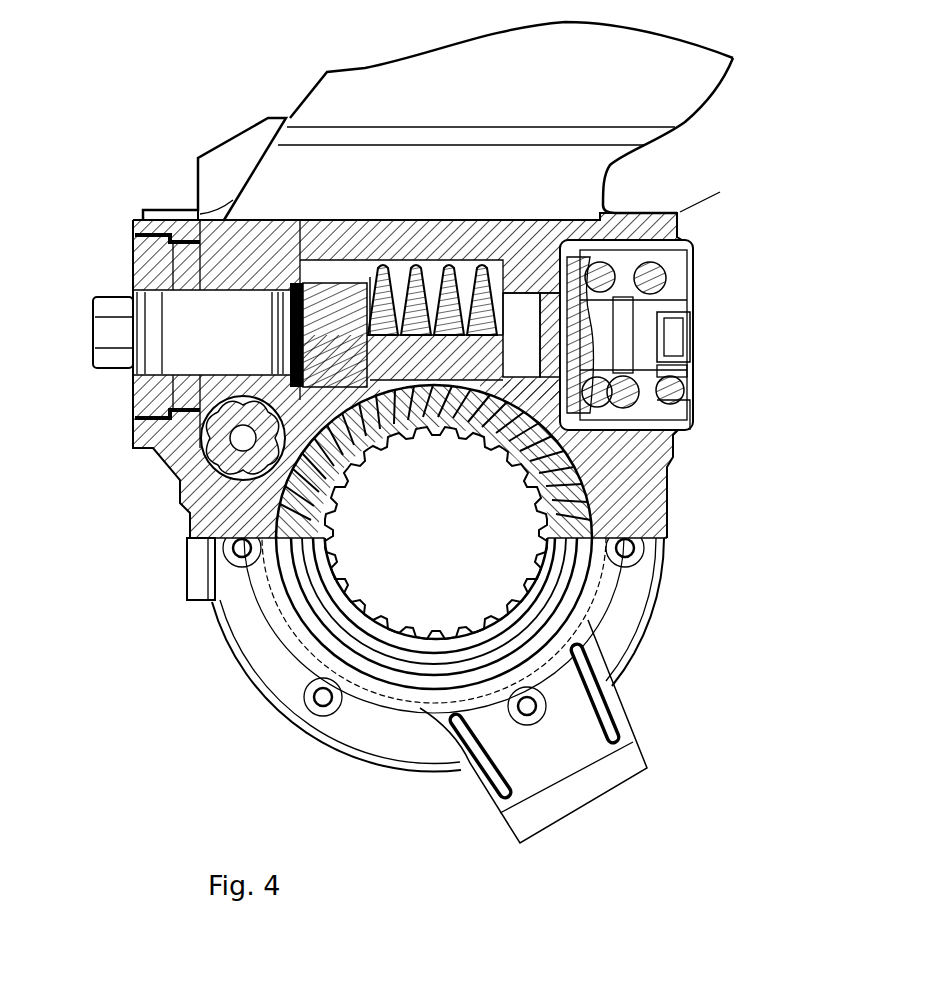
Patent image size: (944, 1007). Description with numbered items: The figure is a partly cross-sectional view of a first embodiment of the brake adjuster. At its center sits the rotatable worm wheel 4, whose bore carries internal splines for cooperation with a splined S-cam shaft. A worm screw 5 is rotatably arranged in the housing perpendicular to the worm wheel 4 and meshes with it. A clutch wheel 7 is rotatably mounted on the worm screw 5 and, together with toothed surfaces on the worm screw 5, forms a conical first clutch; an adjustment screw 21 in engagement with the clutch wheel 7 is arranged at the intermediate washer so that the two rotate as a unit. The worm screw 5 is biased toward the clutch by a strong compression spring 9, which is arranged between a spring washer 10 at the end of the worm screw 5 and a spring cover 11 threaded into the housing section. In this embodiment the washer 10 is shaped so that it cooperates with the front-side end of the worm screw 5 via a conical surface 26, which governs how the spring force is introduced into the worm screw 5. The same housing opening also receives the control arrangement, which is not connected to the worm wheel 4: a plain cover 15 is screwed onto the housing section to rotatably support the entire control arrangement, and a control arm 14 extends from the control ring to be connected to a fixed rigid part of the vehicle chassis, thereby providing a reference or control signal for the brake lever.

The worm wheel 4 is at (583, 507).
The worm screw 5 is at (467, 290).
The clutch wheel 7 is at (207, 258).
The compression spring 9 is at (625, 288).
The spring washer 10 is at (600, 253).
The spring cover 11 is at (683, 373).
The control arm 14 is at (548, 760).
The plain cover 15 is at (270, 643).
The adjustment screw 21 is at (220, 457).
The conical surface 26 is at (587, 327).